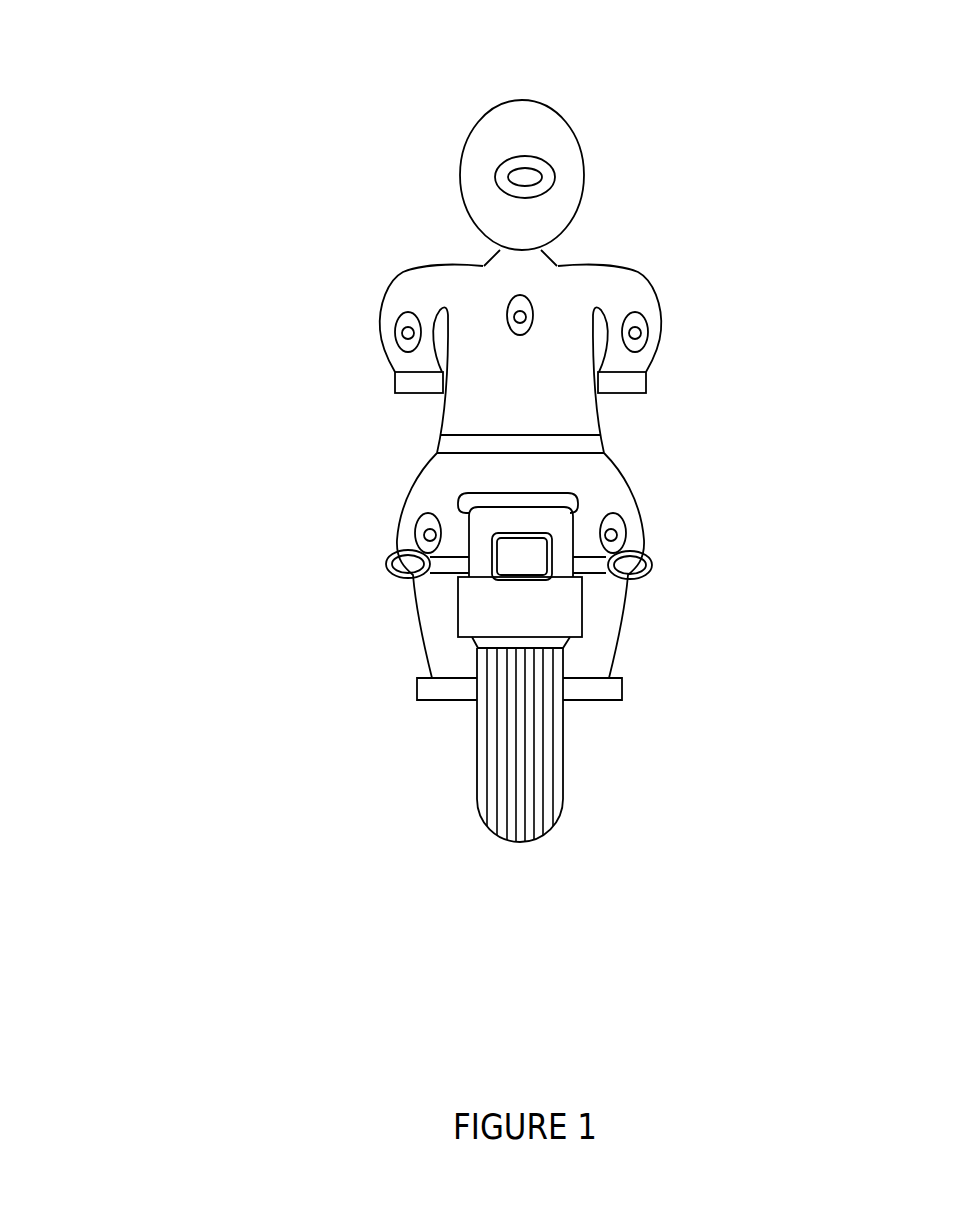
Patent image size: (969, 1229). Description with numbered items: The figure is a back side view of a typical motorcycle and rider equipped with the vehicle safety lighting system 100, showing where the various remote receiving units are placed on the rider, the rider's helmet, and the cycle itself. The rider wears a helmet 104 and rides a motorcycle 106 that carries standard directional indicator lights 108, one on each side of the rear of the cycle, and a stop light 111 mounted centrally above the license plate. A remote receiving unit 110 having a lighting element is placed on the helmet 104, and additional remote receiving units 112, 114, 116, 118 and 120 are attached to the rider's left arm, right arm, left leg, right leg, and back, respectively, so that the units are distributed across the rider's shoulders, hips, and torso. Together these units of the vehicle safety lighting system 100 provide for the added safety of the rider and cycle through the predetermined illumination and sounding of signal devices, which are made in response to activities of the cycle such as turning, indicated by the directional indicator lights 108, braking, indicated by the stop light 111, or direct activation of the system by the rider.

The vehicle safety lighting system 100 is at (218, 113).
The helmet 104 is at (492, 135).
The motorcycle 106 is at (450, 759).
The directional indicator lights 108 is at (410, 566).
The remote receiving unit 110 is at (520, 177).
The stop light 111 is at (520, 552).
The remote receiving unit 112 is at (408, 332).
The remote receiving unit 114 is at (635, 332).
The remote receiving unit 116 is at (428, 535).
The remote receiving unit 118 is at (618, 535).
The remote receiving unit 120 is at (530, 302).